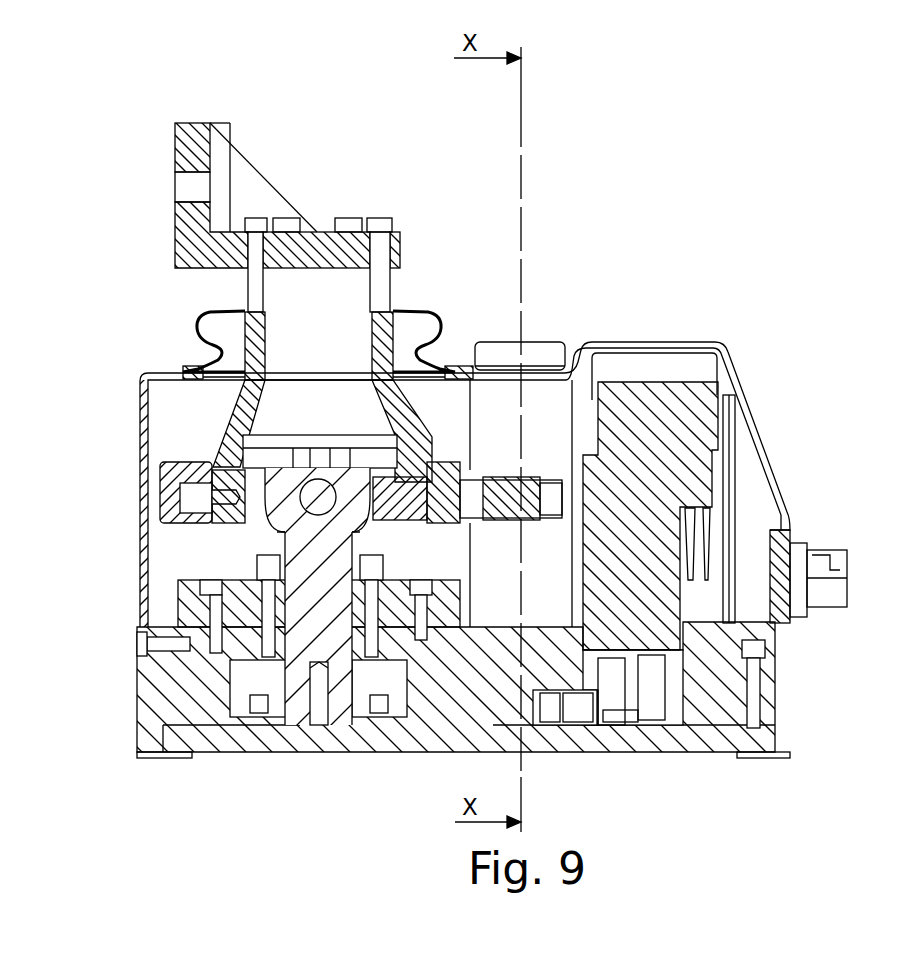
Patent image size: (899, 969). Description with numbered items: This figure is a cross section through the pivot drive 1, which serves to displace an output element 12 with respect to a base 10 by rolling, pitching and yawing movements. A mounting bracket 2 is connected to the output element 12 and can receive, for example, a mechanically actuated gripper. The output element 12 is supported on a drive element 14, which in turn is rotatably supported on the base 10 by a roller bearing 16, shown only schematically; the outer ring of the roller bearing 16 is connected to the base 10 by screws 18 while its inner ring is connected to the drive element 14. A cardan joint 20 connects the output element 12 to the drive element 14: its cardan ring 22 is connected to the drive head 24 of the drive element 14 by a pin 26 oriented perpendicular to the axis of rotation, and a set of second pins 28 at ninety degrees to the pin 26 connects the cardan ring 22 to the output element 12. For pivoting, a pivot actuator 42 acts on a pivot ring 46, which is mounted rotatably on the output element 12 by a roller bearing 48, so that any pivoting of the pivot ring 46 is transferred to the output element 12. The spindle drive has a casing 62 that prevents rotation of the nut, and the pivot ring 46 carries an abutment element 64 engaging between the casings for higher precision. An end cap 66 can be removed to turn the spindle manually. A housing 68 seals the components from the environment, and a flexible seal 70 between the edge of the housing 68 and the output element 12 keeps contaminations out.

The pivot drive 1 is at (737, 322).
The mounting bracket 2 is at (245, 185).
The base 10 is at (775, 707).
The output element 12 is at (383, 333).
The drive element 14 is at (378, 715).
The roller bearing 16 is at (238, 588).
The screws 18 is at (195, 593).
The cardan joint 20 is at (238, 463).
The cardan ring 22 is at (458, 368).
The drive head 24 is at (360, 490).
The pin 26 is at (313, 494).
The second pins 28 is at (393, 503).
The pivot actuator 42 is at (637, 555).
The pivot ring 46 is at (172, 477).
The roller bearing 48 is at (195, 503).
The casing 62 is at (552, 463).
The abutment element 64 is at (541, 520).
The end cap 66 is at (540, 352).
The housing 68 is at (763, 453).
The flexible seal 70 is at (208, 318).